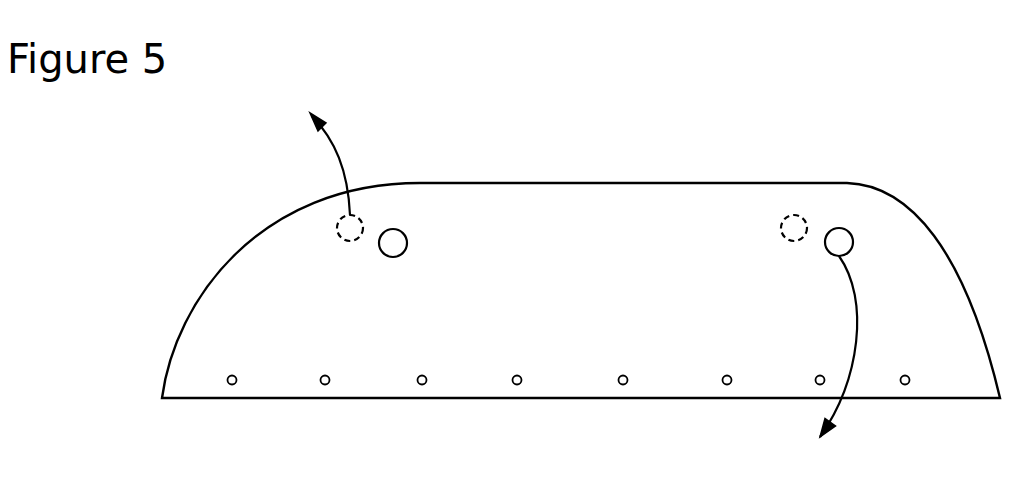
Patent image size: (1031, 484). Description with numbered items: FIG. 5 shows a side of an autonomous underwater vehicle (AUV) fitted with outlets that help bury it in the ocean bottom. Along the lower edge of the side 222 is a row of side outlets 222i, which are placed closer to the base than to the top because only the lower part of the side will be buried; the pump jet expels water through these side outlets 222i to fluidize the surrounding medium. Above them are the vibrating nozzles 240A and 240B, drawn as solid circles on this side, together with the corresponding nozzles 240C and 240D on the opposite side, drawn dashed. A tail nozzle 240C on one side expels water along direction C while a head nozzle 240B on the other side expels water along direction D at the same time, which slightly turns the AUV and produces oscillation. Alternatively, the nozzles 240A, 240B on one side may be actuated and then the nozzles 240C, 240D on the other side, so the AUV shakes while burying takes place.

The blade plate 222 is at (581, 290).
The side outlets 222i is at (517, 386).
The vibrating nozzle 240A is at (393, 229).
The head nozzle 240B is at (852, 237).
The tail nozzle 240C is at (342, 220).
The vibrating nozzle 240D is at (784, 219).
The direction C is at (337, 153).
The direction D is at (857, 293).